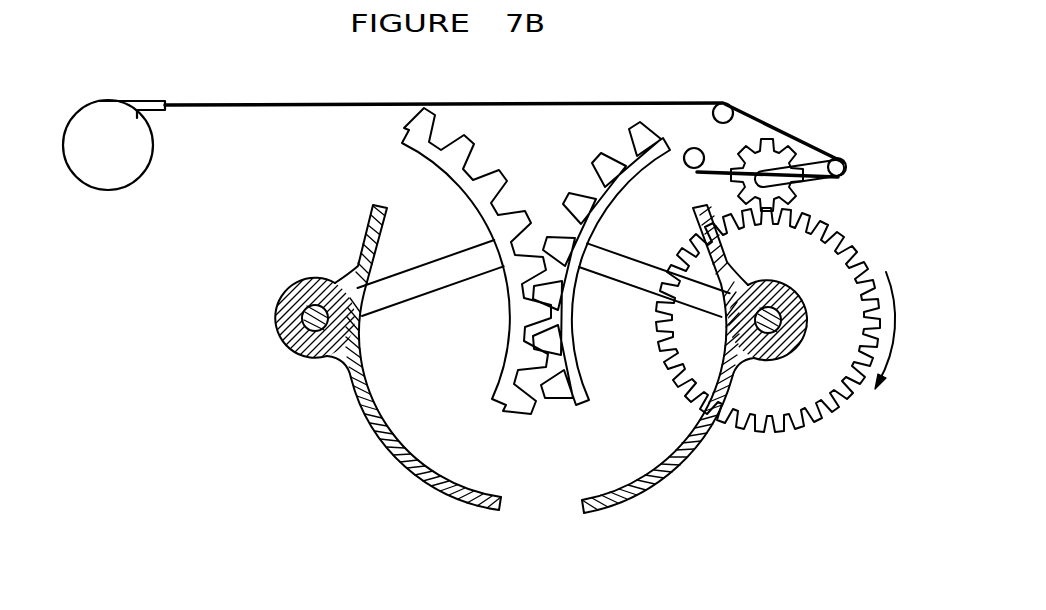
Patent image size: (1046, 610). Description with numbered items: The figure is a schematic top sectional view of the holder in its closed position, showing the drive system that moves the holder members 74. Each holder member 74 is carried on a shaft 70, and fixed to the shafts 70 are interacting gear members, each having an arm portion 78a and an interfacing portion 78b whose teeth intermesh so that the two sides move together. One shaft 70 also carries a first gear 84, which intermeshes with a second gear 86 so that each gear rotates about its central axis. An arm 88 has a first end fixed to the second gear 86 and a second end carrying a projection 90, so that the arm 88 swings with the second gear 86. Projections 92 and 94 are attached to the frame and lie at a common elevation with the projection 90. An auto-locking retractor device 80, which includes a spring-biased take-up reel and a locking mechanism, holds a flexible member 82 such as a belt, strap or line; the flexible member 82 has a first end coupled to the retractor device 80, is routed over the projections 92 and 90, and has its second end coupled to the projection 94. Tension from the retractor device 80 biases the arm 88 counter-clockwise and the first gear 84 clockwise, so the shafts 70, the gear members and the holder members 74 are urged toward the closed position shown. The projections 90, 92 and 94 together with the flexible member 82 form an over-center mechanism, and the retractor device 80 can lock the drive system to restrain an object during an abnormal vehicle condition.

The shaft 70 is at (312, 318).
The holder member 74 is at (420, 480).
The arm portion 78a is at (408, 292).
The interfacing portion 78b is at (504, 390).
The retractor device 80 is at (90, 160).
The flexible member 82 is at (232, 100).
The first gear 84 is at (778, 394).
The second gear 86 is at (780, 200).
The arm 88 is at (818, 166).
The projection 90 is at (842, 163).
The projection 92 is at (731, 102).
The projection 94 is at (689, 165).